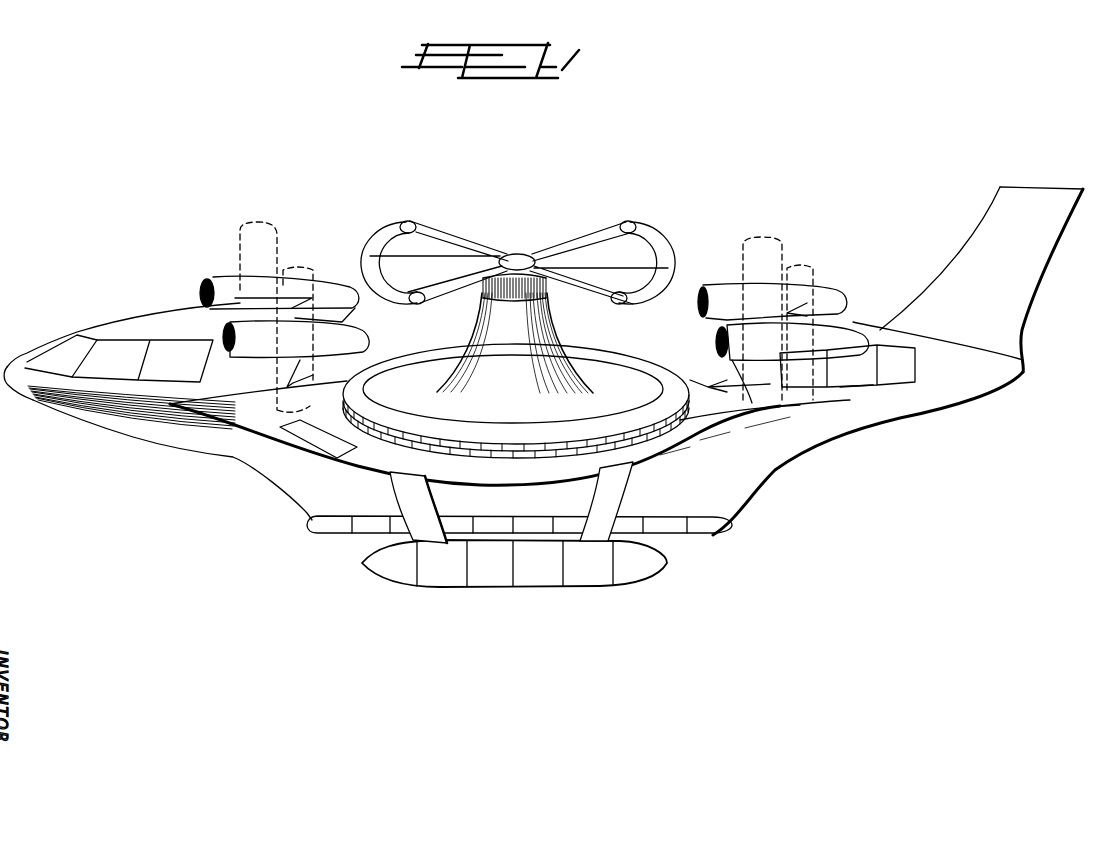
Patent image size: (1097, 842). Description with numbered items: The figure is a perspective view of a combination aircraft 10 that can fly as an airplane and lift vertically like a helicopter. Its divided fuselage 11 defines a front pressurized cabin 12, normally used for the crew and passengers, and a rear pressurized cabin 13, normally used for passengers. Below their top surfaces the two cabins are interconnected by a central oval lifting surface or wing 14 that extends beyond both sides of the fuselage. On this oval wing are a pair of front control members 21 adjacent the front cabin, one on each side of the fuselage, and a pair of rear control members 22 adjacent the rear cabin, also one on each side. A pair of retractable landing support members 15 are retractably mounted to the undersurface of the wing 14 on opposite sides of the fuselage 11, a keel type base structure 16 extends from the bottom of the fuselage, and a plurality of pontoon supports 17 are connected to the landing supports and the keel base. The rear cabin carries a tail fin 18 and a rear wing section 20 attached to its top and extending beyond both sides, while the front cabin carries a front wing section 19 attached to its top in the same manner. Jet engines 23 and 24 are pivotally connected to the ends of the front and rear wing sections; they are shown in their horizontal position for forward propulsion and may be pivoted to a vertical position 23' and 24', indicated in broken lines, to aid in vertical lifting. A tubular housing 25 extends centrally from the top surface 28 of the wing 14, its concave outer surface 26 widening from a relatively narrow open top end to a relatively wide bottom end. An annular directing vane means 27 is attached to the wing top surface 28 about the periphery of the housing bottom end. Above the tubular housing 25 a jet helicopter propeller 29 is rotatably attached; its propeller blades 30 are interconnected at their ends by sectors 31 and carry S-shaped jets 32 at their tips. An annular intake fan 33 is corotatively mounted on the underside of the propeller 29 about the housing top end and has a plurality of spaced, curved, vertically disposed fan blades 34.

The combination aircraft 10 is at (840, 178).
The divided fuselage 11 is at (119, 306).
The front pressurized cabin 12 is at (190, 317).
The rear pressurized cabin 13 is at (853, 320).
The central oval lifting surface or wing 14 is at (342, 470).
The retractable landing support members 15 is at (424, 537).
The keel type base structure 16 is at (222, 458).
The pontoon supports 17 is at (370, 522).
The tail fin 18 is at (977, 242).
The front wing section 19 is at (236, 298).
The rear wing section 20 is at (783, 305).
The front control members 21 is at (300, 377).
The rear control members 22 is at (733, 385).
The jet engines 23 is at (315, 331).
The vertical position of jet engines 23' is at (286, 301).
The jet engines 24 is at (786, 307).
The vertical position of jet engines 24' is at (788, 301).
The tubular housing 25 is at (530, 330).
The concave outer surface 26 is at (560, 347).
The annular directing vane means 27 is at (492, 428).
The top surface of the wing 28 is at (673, 440).
The jet helicopter propeller 29 is at (588, 238).
The propeller blades 30 is at (440, 262).
The sectors 31 is at (397, 227).
The S-shaped jets 32 is at (409, 222).
The annular intake fan 33 is at (517, 274).
The fan blades 34 is at (480, 293).